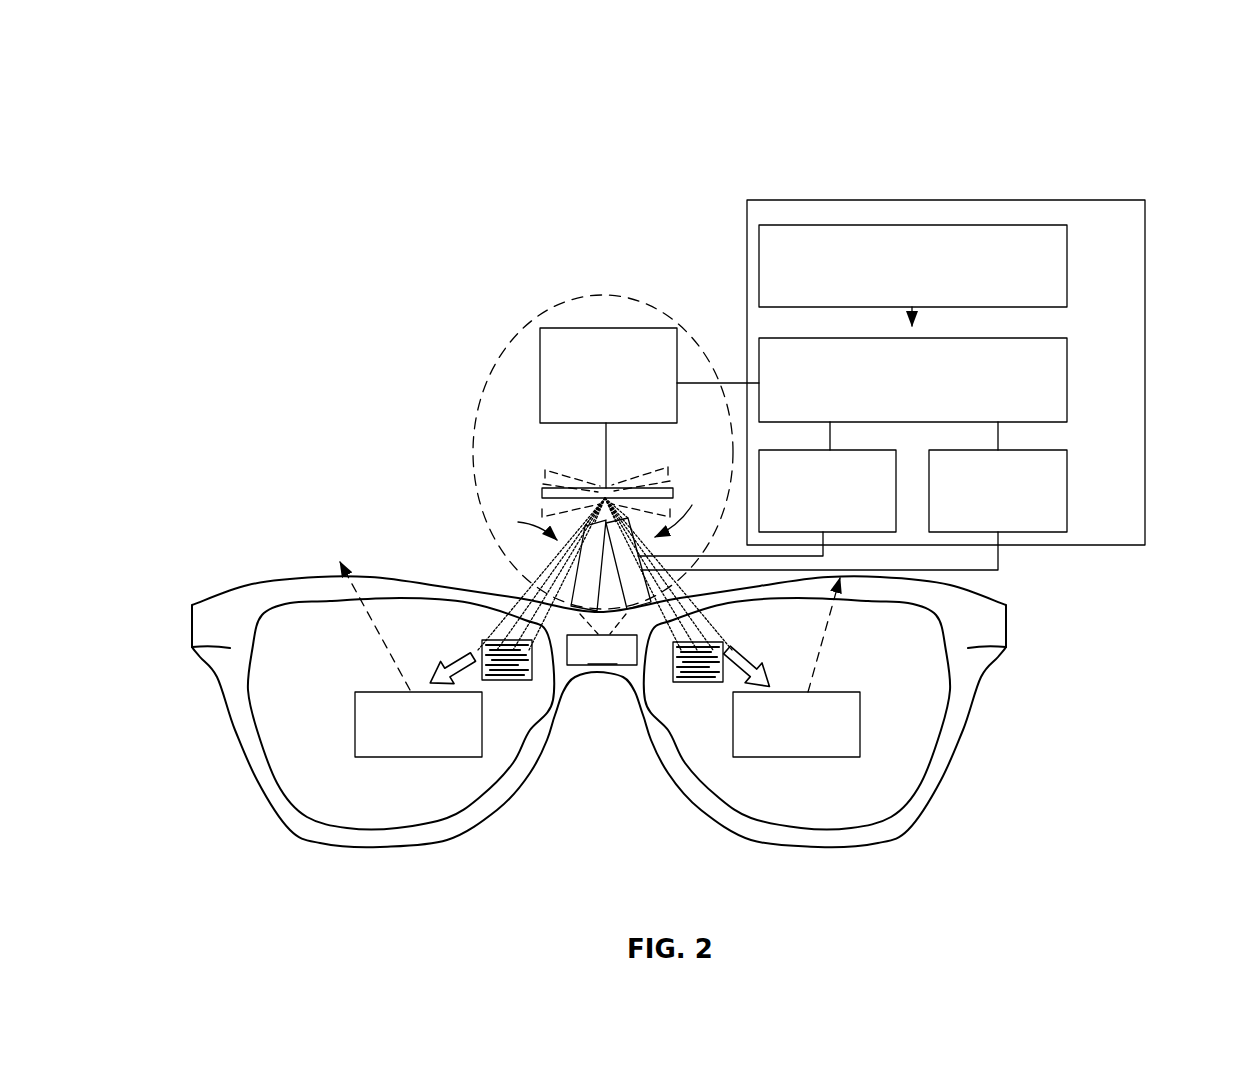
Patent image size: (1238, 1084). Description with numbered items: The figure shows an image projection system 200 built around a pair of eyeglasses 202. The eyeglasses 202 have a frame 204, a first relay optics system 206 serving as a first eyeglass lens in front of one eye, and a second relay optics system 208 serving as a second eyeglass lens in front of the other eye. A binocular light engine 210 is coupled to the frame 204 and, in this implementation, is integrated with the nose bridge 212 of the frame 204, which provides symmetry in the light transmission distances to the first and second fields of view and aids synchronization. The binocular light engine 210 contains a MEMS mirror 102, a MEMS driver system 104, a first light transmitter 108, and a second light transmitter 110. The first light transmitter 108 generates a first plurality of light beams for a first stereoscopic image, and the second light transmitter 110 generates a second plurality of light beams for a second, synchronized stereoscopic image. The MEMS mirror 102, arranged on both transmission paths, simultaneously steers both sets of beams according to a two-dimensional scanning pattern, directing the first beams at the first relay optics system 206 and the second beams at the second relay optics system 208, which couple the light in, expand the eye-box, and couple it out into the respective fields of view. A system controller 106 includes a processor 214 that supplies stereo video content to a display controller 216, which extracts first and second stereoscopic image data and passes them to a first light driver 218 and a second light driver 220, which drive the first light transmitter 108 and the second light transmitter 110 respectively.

The image projection system 200 is at (182, 65).
The eyeglasses 202 is at (234, 548).
The frame 204 is at (200, 647).
The first relay optics system 206 is at (308, 797).
The second relay optics system 208 is at (890, 797).
The binocular light engine 210 is at (510, 338).
The nose bridge 212 is at (588, 684).
The MEMS mirror 102 is at (542, 491).
The MEMS driver system 104 is at (540, 380).
The system controller 106 is at (1093, 201).
The first light transmitter 108 is at (574, 584).
The second light transmitter 110 is at (642, 562).
The processor 214 is at (1067, 264).
The display controller 216 is at (1067, 377).
The first light driver 218 is at (1067, 497).
The second light driver 220 is at (883, 450).